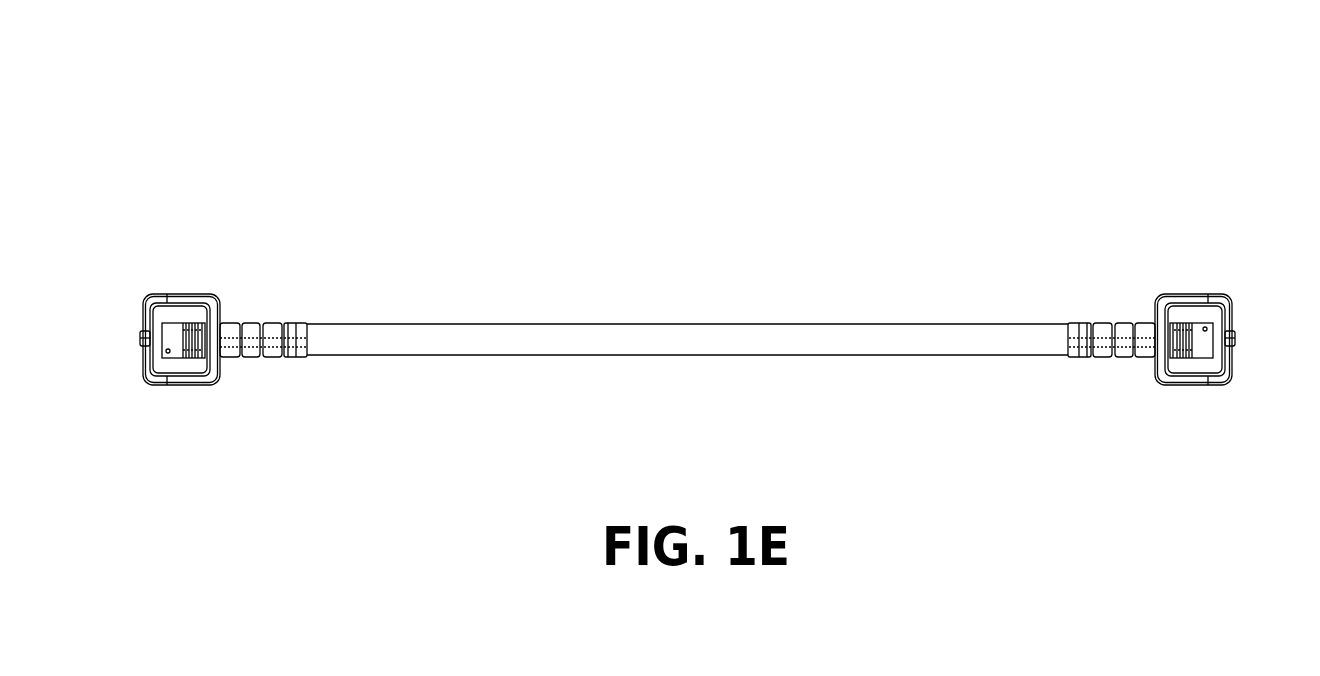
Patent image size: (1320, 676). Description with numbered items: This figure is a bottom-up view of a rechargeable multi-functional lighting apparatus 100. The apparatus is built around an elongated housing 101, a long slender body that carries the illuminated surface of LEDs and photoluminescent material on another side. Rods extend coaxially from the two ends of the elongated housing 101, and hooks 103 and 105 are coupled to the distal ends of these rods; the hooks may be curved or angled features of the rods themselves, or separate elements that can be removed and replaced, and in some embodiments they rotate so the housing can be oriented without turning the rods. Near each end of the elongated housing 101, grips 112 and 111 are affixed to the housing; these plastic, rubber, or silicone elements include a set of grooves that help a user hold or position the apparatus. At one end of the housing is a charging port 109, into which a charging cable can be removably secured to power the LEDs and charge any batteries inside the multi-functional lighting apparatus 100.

The multi-functional lighting apparatus 100 is at (238, 103).
The elongated housing 101 is at (665, 324).
The hook 103 is at (1200, 386).
The hook 105 is at (179, 386).
The charging port 109 is at (1238, 340).
The grip 111 is at (1106, 322).
The grip 112 is at (244, 323).